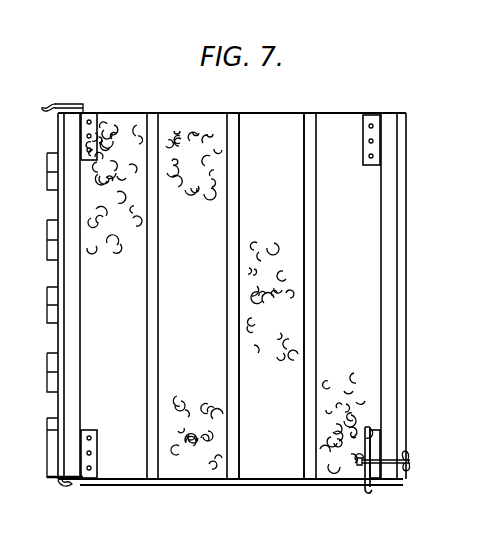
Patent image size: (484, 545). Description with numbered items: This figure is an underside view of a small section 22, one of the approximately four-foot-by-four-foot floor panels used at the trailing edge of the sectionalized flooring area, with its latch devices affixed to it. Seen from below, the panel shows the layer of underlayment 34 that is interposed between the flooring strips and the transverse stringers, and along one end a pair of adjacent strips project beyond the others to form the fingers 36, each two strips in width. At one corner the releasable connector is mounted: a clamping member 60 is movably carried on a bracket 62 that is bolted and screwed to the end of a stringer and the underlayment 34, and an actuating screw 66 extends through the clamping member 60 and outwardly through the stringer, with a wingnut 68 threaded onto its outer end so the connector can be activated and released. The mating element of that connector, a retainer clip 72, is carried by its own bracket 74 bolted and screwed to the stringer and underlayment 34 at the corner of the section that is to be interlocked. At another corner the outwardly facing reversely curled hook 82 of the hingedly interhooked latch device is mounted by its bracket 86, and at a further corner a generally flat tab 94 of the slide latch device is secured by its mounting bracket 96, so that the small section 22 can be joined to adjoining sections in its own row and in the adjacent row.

The small section 22 is at (207, 130).
The underlayment 34 is at (281, 215).
The projecting finger 36 is at (50, 310).
The clamping member 60 is at (226, 316).
The bracket 62 is at (378, 442).
The actuating screw 66 is at (358, 460).
The wingnut 68 is at (410, 457).
The retainer clip 72 is at (378, 117).
The bracket 74 is at (368, 128).
The reversely curled hook 82 is at (45, 106).
The bracket 86 is at (89, 116).
The flat tab 94 is at (67, 484).
The mounting bracket 96 is at (95, 445).